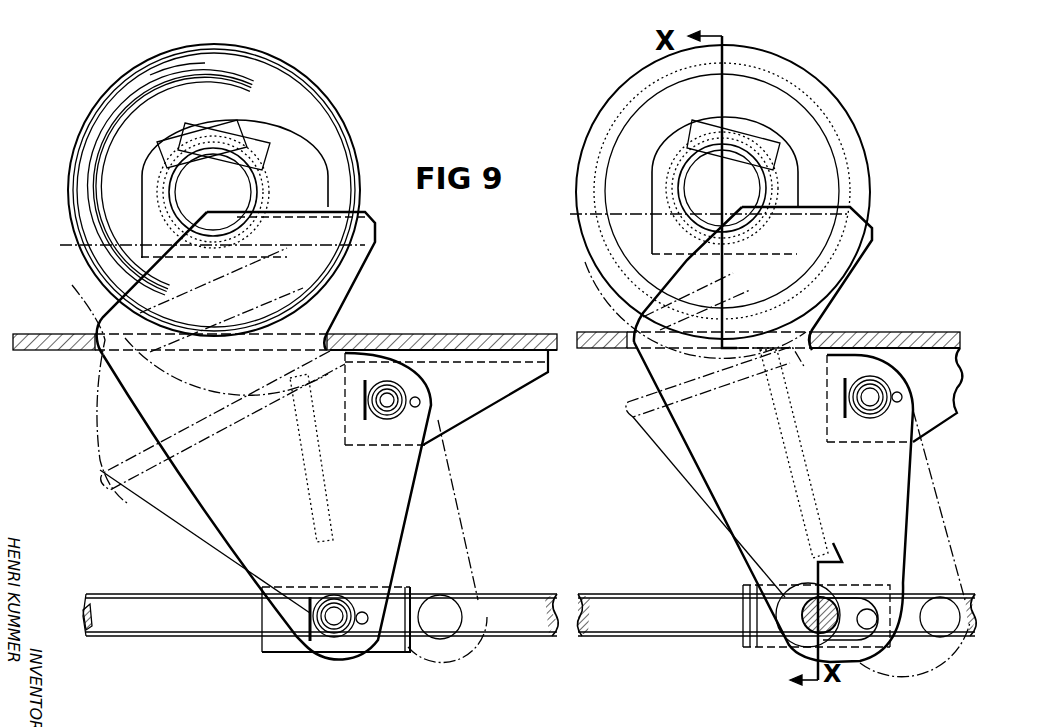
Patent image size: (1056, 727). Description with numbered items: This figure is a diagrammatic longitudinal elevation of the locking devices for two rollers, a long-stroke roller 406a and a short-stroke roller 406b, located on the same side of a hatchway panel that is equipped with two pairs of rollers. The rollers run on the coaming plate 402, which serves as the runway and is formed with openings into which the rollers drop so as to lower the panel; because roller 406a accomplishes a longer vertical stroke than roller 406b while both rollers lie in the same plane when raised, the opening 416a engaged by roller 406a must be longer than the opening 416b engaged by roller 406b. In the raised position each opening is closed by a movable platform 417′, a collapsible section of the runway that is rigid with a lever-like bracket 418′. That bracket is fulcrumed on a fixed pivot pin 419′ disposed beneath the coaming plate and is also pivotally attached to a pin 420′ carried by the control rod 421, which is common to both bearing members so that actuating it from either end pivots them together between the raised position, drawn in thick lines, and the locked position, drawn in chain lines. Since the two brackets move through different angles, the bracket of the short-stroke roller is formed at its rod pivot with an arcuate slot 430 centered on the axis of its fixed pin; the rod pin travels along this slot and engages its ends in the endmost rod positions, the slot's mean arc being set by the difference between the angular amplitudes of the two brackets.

The long-stroke roller 406a is at (322, 100).
The short-stroke roller 406b is at (805, 85).
The coaming plate 402 is at (430, 335).
The opening for the long-stroke roller 416a is at (87, 353).
The opening for the short-stroke roller 416b is at (628, 352).
The movable platform 417′ is at (335, 330).
The bracket lever of the long-stroke roller 418′ is at (220, 508).
The fixed pivot pin 419′ is at (387, 417).
The pivot pin 420′ is at (332, 630).
The control rod 421 is at (171, 628).
The arcuate slot 430 is at (847, 600).